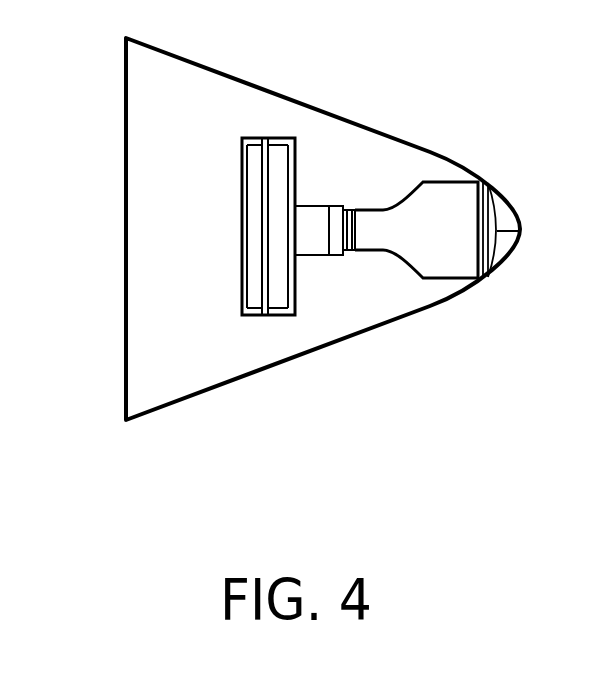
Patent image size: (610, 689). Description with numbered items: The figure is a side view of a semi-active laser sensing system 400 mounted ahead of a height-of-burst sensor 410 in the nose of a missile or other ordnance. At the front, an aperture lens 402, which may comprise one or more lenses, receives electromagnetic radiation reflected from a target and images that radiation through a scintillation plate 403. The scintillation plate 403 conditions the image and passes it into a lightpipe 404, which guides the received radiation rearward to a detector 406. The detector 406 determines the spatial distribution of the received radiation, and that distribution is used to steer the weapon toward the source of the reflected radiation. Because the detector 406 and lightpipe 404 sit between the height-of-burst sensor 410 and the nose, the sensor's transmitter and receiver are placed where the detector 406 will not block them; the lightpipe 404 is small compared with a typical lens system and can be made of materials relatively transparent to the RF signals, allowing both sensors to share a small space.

The sensing system 400 is at (342, 497).
The aperture lens 402 is at (518, 232).
The scintillation plate 403 is at (485, 180).
The lightpipe 404 is at (382, 209).
The detector 406 is at (337, 256).
The height-of-burst sensor 410 is at (242, 271).